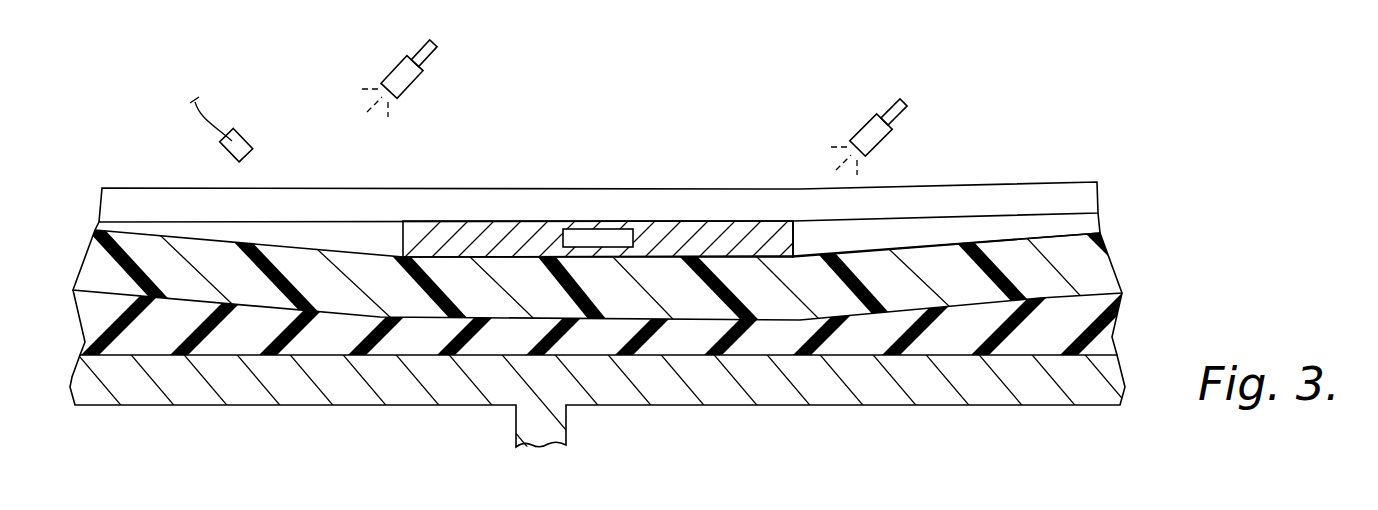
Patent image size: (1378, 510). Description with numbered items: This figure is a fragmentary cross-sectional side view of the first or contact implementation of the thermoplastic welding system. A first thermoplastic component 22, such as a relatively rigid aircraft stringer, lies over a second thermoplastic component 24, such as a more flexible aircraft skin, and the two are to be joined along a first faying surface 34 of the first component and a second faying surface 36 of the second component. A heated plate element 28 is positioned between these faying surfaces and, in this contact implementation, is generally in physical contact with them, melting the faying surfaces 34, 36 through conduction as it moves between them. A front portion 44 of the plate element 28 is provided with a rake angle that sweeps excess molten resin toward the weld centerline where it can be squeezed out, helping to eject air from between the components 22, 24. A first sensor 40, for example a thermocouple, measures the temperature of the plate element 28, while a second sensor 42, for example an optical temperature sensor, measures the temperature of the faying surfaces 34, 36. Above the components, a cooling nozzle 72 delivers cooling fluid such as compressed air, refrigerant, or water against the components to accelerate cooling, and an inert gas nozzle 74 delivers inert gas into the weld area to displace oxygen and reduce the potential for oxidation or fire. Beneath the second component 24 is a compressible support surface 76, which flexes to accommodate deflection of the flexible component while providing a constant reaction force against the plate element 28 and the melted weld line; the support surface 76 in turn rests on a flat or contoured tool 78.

The first thermoplastic component 22 is at (1082, 202).
The second thermoplastic component 24 is at (1105, 245).
The plate element 28 is at (460, 235).
The first faying surface 34 is at (893, 215).
The second faying surface 36 is at (877, 255).
The first sensor 40 is at (590, 237).
The second sensor 42 is at (242, 137).
The front portion of the plate element 44 is at (797, 243).
The cooling nozzle 72 is at (398, 80).
The inert gas nozzle 74 is at (873, 132).
The support surface 76 is at (1118, 323).
The tool 78 is at (1080, 388).